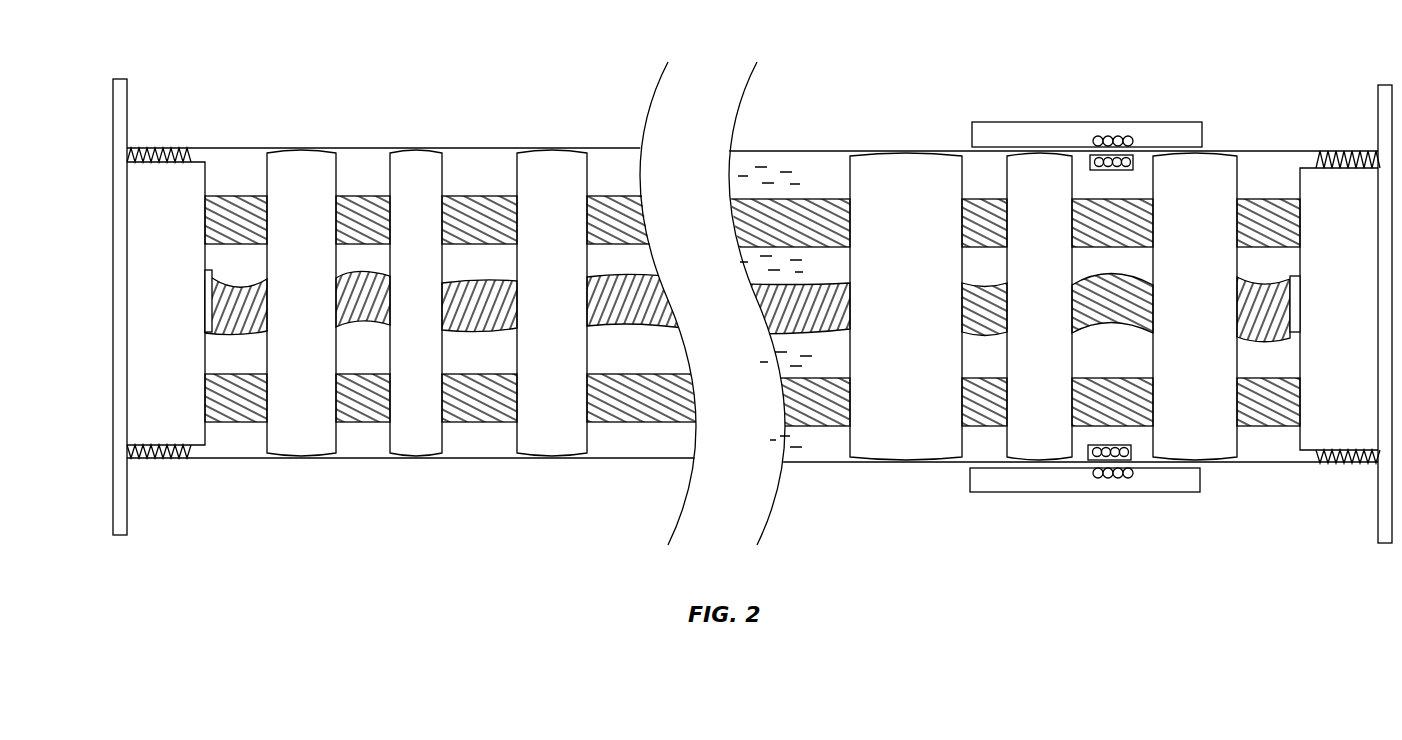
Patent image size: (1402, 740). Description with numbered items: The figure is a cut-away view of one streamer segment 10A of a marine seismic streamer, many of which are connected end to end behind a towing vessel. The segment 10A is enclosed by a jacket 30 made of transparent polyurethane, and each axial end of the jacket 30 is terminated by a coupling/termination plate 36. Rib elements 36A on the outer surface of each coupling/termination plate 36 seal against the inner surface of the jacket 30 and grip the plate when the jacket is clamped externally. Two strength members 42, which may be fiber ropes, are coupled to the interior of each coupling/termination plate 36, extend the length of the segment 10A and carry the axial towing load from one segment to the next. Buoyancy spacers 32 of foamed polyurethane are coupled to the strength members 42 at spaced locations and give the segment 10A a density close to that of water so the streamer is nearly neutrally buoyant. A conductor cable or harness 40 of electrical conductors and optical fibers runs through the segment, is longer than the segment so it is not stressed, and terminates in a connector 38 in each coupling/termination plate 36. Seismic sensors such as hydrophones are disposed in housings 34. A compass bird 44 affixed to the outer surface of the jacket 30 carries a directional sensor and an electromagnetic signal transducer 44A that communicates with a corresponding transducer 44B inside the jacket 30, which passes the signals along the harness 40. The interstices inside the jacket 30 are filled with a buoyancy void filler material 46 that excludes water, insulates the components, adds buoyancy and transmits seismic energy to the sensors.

The streamer segment 10A is at (586, 44).
The jacket 30 is at (489, 145).
The buoyancy spacers 32 is at (301, 151).
The sensor housings 34 is at (550, 152).
The coupling/termination plate 36 is at (128, 412).
The rib elements 36A is at (163, 148).
The connector 38 is at (210, 276).
The conductor cable or harness 40 is at (262, 332).
The strength members 42 is at (338, 196).
The compass bird 44 is at (1012, 122).
The electromagnetic signal transducer 44A is at (1106, 136).
The corresponding transducer 44B is at (1136, 160).
The buoyancy void filler material 46 is at (792, 438).